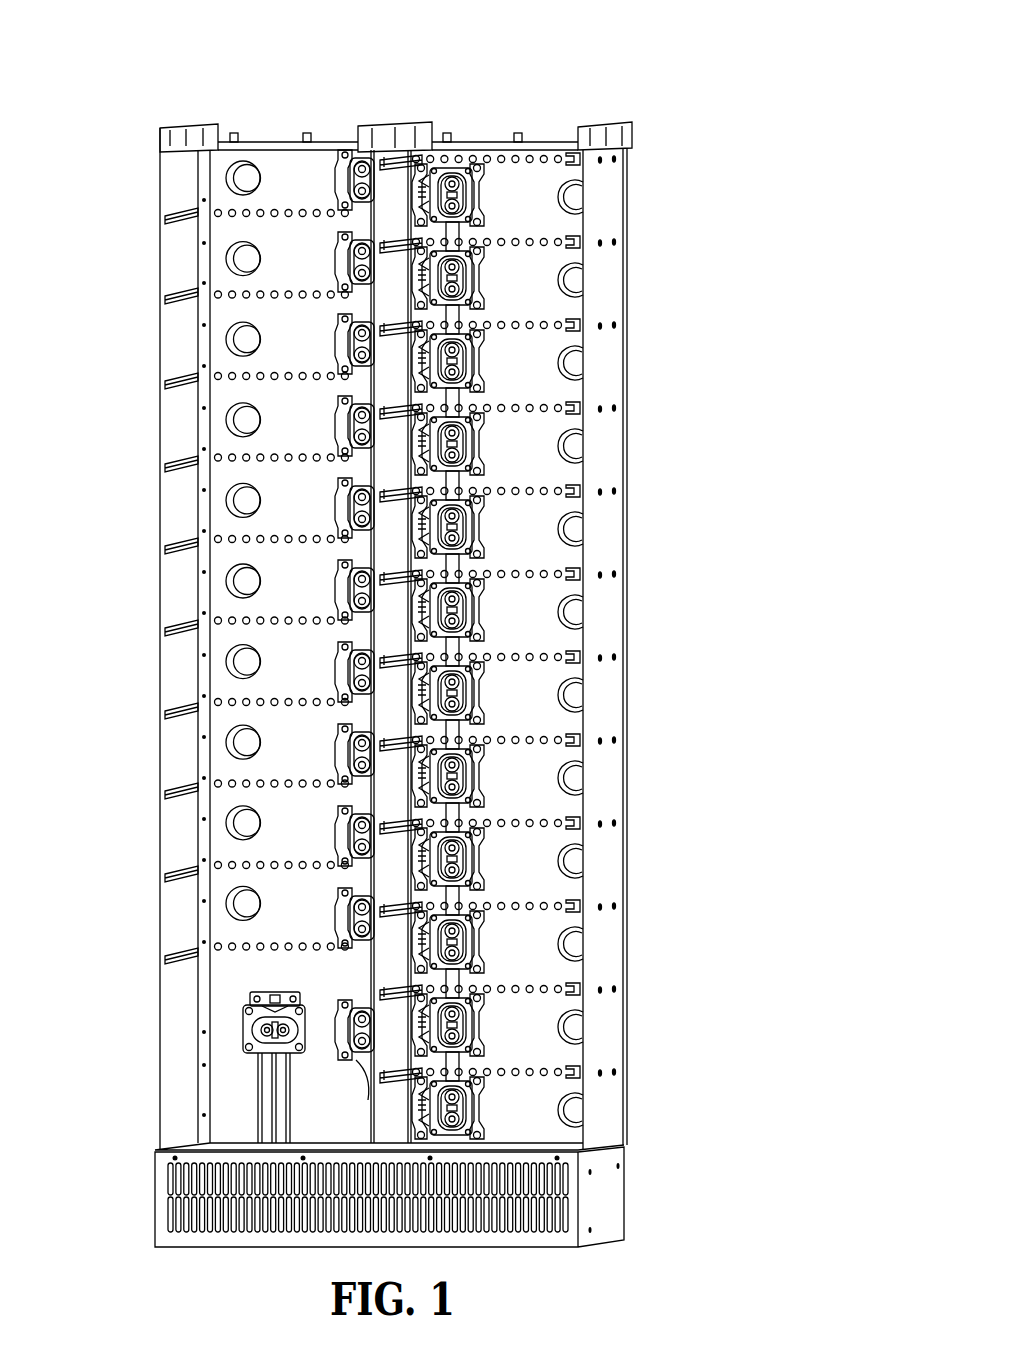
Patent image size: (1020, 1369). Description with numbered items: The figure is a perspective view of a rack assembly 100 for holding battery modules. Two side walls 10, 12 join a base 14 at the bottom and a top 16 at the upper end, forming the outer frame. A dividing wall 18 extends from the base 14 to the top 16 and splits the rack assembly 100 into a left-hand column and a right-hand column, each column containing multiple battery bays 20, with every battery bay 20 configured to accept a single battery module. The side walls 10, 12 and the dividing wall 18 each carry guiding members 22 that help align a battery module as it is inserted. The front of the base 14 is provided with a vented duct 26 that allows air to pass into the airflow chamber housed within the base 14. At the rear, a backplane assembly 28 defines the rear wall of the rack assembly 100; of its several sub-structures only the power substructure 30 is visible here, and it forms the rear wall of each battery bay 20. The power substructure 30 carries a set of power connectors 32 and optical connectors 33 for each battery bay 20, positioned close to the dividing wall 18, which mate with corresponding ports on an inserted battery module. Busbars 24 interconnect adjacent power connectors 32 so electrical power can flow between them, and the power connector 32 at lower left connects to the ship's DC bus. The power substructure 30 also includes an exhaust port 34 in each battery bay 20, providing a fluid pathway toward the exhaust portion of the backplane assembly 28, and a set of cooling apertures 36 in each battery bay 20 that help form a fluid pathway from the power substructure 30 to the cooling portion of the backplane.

The rack assembly 100 is at (706, 71).
The side wall 10 is at (160, 787).
The side wall 12 is at (600, 706).
The base 14 is at (605, 1200).
The top 16 is at (485, 148).
The dividing wall 18 is at (375, 1108).
The battery bay 20 is at (225, 405).
The guiding member 22 is at (405, 124).
The busbar 24 is at (345, 566).
The vented duct 26 is at (165, 1216).
The backplane assembly 28 is at (530, 880).
The power substructure 30 is at (525, 1053).
The power connector 32 is at (345, 328).
The optical connector 33 is at (430, 572).
The exhaust port 34 is at (240, 676).
The cooling aperture 36 is at (228, 870).